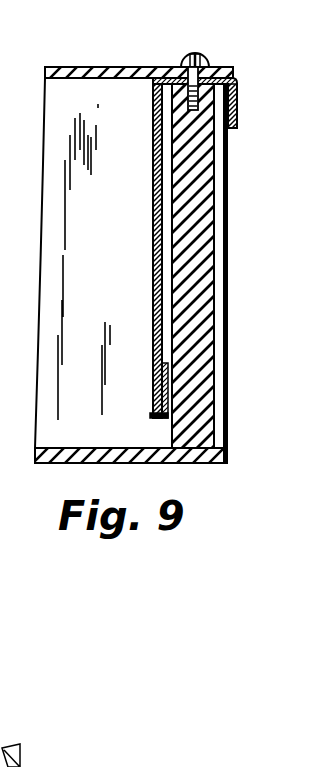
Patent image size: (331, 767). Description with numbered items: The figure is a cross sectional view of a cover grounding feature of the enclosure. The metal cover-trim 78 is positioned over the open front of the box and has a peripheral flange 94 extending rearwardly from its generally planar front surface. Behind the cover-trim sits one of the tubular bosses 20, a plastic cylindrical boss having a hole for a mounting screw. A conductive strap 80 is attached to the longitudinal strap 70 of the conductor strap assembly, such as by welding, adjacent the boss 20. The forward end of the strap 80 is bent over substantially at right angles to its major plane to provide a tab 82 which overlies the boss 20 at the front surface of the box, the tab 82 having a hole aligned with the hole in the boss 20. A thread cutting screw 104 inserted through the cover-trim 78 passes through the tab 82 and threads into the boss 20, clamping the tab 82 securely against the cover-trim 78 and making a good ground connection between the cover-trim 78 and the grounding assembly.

The cover-trim 78 is at (58, 67).
The tab 82 is at (230, 71).
The peripheral flange 94 is at (238, 120).
The tubular boss 20 is at (185, 222).
The conductive strap 80 is at (158, 257).
The longitudinal strap 70 is at (164, 368).
The thread cutting screw 104 is at (187, 53).